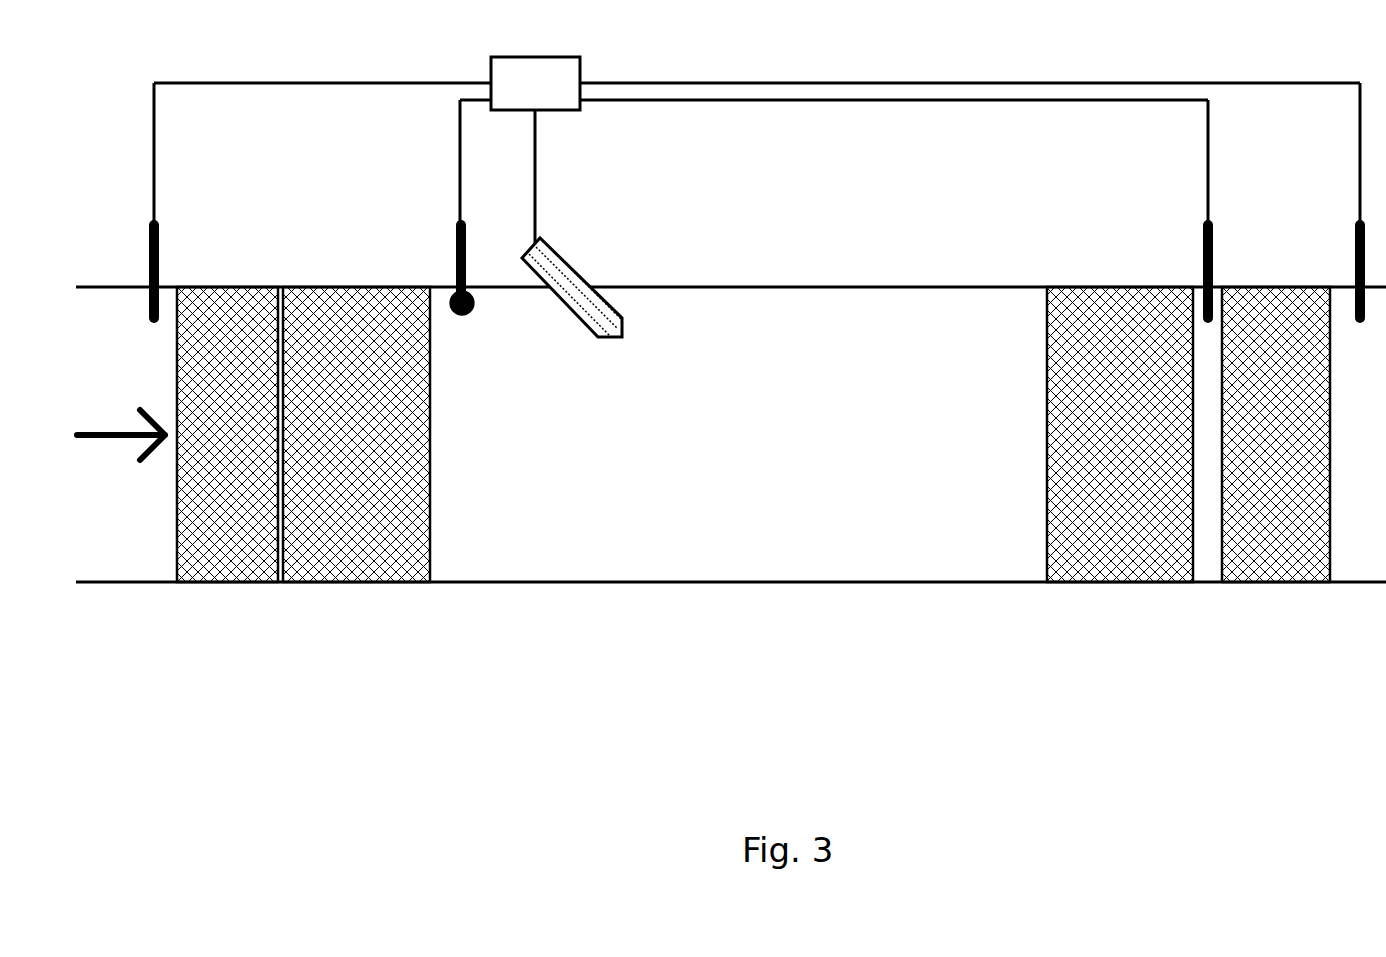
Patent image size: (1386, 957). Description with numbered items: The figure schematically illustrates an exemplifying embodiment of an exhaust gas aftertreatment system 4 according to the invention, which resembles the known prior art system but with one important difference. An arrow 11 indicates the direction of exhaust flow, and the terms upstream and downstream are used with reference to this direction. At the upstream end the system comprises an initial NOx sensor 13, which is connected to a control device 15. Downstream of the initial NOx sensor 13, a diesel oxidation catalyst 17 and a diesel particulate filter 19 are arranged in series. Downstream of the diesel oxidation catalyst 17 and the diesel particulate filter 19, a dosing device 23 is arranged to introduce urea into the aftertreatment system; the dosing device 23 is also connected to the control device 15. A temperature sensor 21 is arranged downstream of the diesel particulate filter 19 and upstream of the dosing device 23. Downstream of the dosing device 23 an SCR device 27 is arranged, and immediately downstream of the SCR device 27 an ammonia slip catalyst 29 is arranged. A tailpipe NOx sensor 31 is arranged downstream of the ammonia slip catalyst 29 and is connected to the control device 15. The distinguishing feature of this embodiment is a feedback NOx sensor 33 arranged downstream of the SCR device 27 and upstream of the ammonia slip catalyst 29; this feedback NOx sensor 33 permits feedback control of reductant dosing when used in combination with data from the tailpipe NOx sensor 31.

The exhaust gas aftertreatment system 4 is at (990, 640).
The arrow 11 is at (105, 437).
The initial NOx sensor 13 is at (152, 226).
The control device 15 is at (757, 150).
The diesel oxidation catalyst 17 is at (228, 585).
The diesel particulate filter 19 is at (315, 585).
The temperature sensor 21 is at (459, 228).
The dosing device 23 is at (545, 242).
The SCR device 27 is at (1121, 286).
The ammonia slip catalyst 29 is at (1272, 585).
The tailpipe NOx sensor 31 is at (1355, 232).
The feedback NOx sensor 33 is at (1203, 228).